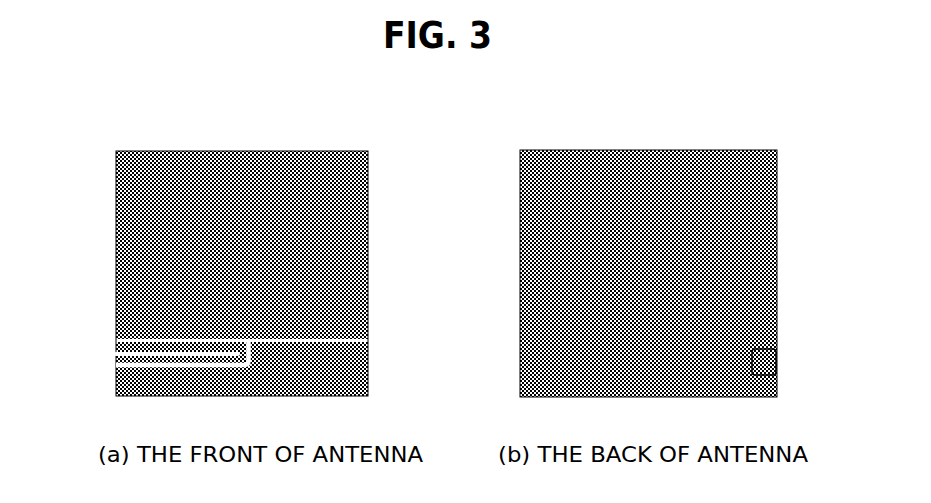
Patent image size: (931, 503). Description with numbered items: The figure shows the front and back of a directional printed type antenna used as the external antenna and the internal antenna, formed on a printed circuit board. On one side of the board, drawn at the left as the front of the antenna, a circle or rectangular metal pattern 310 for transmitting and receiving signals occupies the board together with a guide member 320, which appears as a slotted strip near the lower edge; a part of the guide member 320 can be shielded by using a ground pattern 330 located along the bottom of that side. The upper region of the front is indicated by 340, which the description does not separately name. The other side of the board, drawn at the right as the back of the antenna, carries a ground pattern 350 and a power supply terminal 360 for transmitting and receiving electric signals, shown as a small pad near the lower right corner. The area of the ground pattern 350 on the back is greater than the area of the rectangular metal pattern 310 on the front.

The rectangular metal pattern 310 is at (152, 178).
The guide member 320 is at (132, 357).
The ground pattern 330 is at (125, 380).
The radiating patch 340 is at (247, 153).
The ground pattern 350 is at (777, 150).
The power supply terminal 360 is at (777, 360).